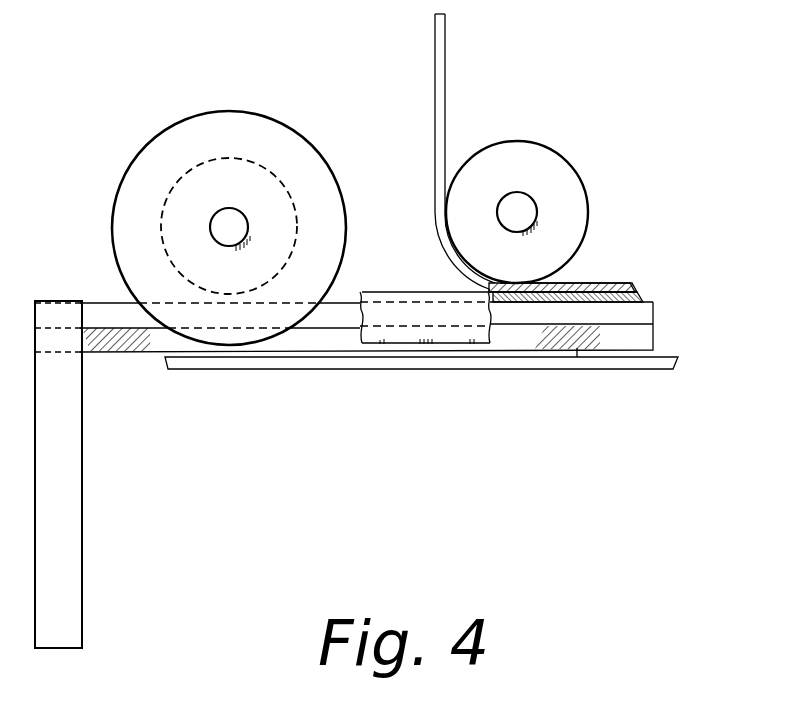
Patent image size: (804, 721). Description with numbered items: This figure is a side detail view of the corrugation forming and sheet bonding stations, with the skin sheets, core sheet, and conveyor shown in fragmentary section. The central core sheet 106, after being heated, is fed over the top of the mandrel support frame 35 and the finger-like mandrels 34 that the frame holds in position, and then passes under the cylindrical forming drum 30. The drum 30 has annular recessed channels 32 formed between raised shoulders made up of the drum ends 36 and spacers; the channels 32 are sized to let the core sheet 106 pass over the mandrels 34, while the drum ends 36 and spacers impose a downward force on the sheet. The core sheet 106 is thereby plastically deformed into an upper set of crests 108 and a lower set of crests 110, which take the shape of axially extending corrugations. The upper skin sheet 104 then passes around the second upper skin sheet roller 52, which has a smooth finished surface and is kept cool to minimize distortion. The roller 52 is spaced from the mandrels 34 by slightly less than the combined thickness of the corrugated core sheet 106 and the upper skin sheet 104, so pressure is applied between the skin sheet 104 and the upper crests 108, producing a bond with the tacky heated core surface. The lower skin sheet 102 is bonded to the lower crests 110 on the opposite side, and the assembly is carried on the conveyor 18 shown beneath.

The cylindrical forming drum 30 is at (218, 78).
The drum ends 36 is at (148, 144).
The annular recessed channels 32 is at (166, 196).
The finger-like mandrels 34 is at (103, 305).
The mandrel support frame 35 is at (76, 497).
The second upper skin sheet roller 52 is at (568, 165).
The upper planar skin sheet 104 is at (443, 50).
The upper set of crests 108 is at (644, 298).
The lower planar skin sheet 102 is at (307, 355).
The central core sheet 106 is at (417, 318).
The lower set of crests 110 is at (490, 352).
The support bar 18 is at (612, 360).